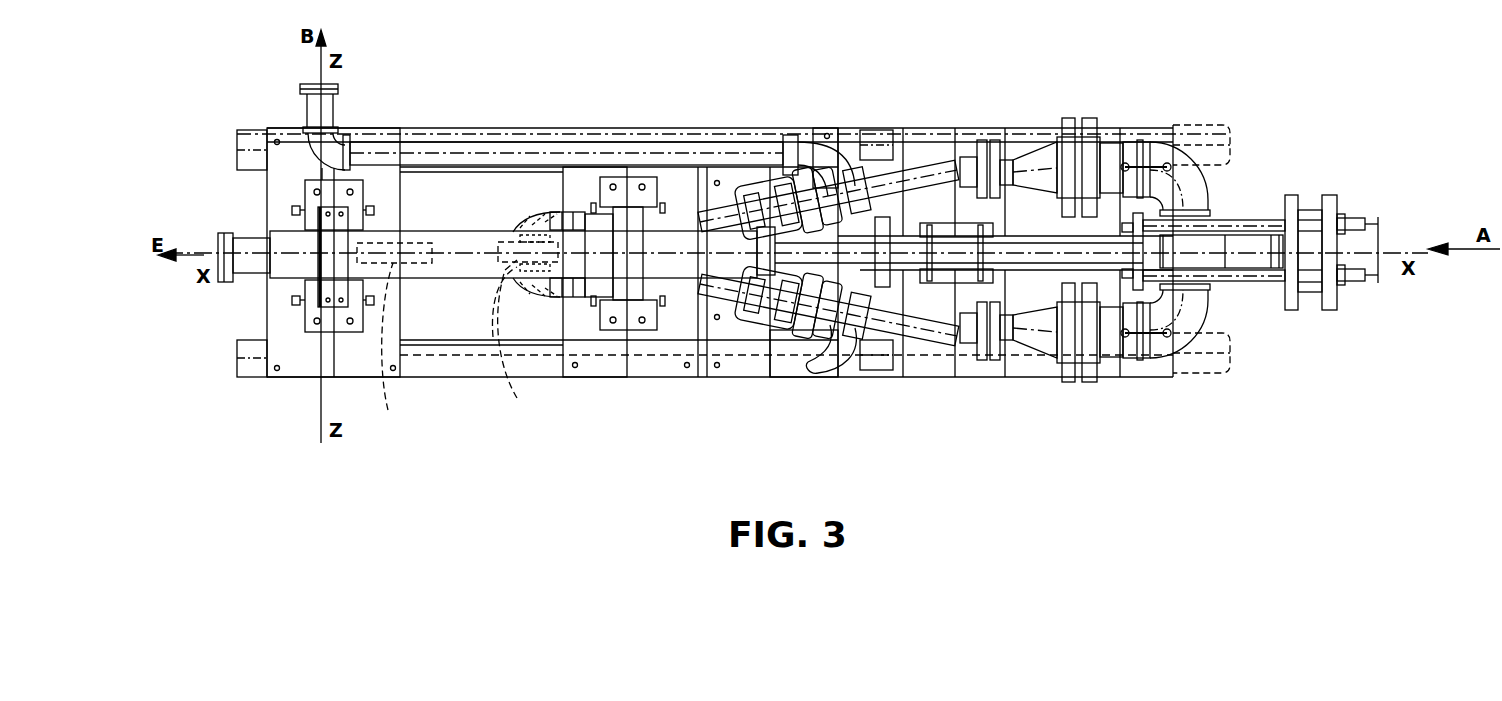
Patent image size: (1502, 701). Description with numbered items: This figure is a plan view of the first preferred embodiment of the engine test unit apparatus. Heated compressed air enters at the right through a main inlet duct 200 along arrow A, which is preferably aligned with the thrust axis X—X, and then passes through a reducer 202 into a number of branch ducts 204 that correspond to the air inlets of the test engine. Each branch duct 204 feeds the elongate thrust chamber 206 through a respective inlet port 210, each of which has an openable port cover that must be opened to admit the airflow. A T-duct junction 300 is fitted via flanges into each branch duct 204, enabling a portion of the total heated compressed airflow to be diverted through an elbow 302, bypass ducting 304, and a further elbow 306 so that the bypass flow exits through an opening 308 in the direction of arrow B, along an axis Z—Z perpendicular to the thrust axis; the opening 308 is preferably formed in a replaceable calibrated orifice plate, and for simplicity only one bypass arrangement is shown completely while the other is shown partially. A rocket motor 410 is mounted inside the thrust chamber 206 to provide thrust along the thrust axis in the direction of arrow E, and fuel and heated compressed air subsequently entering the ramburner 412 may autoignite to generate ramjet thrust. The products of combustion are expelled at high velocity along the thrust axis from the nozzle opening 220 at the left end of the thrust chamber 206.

The main inlet duct 200 is at (1370, 240).
The reducer 202 is at (1032, 157).
The branch duct 204 is at (927, 168).
The thrust chamber 206 is at (432, 280).
The inlet port 210 is at (523, 250).
The nozzle opening 220 is at (217, 242).
The T-duct junction 300 is at (850, 182).
The elbow 302 is at (808, 155).
The bypass ducting 304 is at (535, 155).
The elbow 306 is at (337, 147).
The opening 308 is at (313, 84).
The rocket motor 410 is at (397, 348).
The ramburner 412 is at (500, 243).